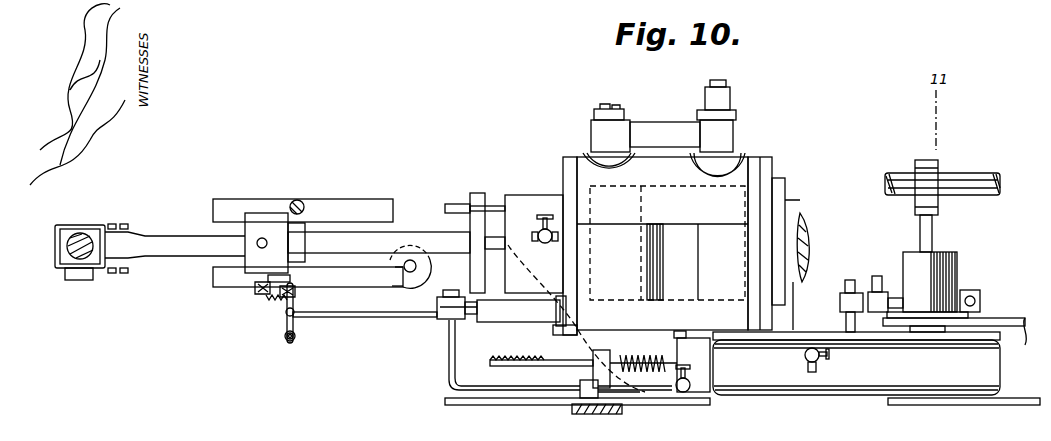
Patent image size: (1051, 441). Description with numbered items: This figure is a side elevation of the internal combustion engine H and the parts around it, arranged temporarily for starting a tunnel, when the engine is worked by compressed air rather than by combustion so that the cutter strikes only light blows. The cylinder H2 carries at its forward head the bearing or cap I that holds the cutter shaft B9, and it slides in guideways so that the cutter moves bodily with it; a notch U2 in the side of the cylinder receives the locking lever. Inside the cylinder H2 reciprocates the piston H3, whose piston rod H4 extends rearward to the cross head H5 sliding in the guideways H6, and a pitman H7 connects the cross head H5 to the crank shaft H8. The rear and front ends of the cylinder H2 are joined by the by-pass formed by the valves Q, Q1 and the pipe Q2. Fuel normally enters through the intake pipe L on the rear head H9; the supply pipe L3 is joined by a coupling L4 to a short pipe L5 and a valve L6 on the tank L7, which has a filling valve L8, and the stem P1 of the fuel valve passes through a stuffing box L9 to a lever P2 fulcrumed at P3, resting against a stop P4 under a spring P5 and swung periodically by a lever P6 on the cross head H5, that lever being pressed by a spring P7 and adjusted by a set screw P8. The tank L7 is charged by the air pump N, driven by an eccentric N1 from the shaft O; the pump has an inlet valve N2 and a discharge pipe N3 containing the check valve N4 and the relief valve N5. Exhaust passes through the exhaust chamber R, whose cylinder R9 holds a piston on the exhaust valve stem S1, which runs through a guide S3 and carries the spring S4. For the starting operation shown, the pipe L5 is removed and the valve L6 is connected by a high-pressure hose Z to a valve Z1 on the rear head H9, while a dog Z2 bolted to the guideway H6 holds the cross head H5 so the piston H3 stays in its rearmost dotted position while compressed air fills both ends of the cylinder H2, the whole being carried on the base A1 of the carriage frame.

The internal combustion engine H is at (651, 215).
The cylinder H2 is at (750, 160).
The piston H3 is at (632, 211).
The piston rod H4 is at (430, 236).
The cross head H5 is at (266, 214).
The cross head guideways H6 is at (322, 230).
The pitman H7 is at (184, 236).
The crank shaft H8 is at (82, 238).
The rear cylinder head H9 is at (563, 160).
The bearing or cap I is at (785, 164).
The valve Q is at (600, 137).
The valve Q1 is at (735, 101).
The pipe Q2 is at (672, 132).
The high-pressure hose Z is at (576, 318).
The valve Z1 is at (545, 228).
The dog Z2 is at (300, 204).
The cutter shaft B9 is at (805, 209).
The notch U2 is at (695, 238).
The intake pipe L is at (510, 318).
The supply pipe L3 is at (447, 366).
The coupling L4 is at (578, 388).
The short pipe L5 is at (638, 393).
The valve L6 is at (683, 393).
The tank L7 is at (792, 396).
The filling valve L8 is at (804, 356).
The stuffing box L9 is at (437, 301).
The air pump N is at (957, 263).
The eccentric N1 is at (938, 209).
The inlet valve N2 is at (980, 299).
The discharge pipe N3 is at (846, 319).
The check valve N4 is at (840, 302).
The relief valve N5 is at (879, 290).
The shaft O is at (985, 174).
The valve stem P1 is at (356, 318).
The lever P2 is at (294, 325).
The fulcrum P3 is at (290, 342).
The stop P4 is at (296, 292).
The spring P5 is at (270, 300).
The lever P6 is at (269, 251).
The spring P7 is at (290, 278).
The set screw P8 is at (255, 288).
The exhaust chamber R is at (703, 338).
The cylinder R9 is at (683, 326).
The valve stem S1 is at (551, 360).
The guide S3 is at (610, 356).
The spring S4 is at (643, 352).
The base A1 is at (522, 406).